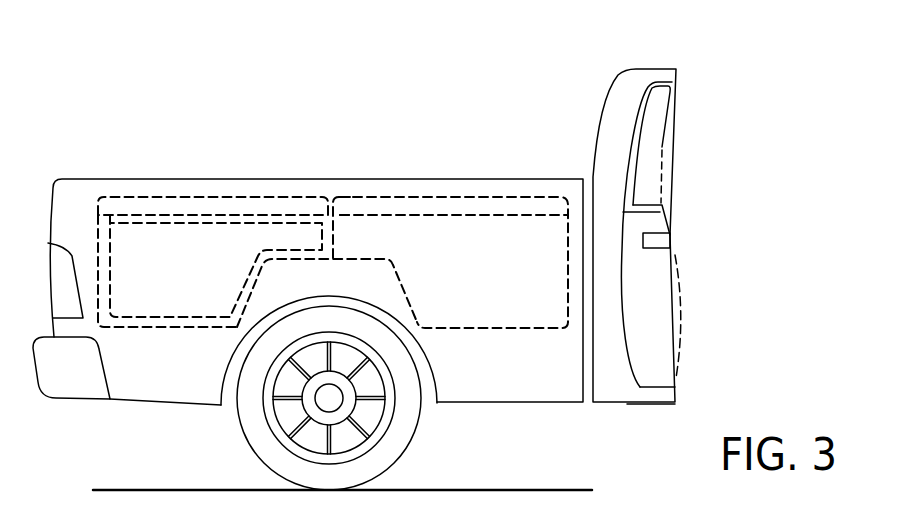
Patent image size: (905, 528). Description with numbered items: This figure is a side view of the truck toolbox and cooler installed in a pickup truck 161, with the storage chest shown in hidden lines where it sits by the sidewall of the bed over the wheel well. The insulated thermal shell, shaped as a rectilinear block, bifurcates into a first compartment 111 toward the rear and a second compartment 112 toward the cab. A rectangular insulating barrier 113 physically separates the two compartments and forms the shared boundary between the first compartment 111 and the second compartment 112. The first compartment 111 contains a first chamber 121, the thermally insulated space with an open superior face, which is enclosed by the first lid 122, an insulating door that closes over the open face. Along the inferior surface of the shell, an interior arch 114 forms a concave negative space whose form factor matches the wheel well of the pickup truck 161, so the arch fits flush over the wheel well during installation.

The first compartment 111 is at (82, 200).
The second compartment 112 is at (458, 228).
The barrier 113 is at (332, 215).
The interior arch 114 is at (338, 275).
The first chamber 121 is at (160, 297).
The first lid 122 is at (178, 203).
The pickup truck 161 is at (482, 308).